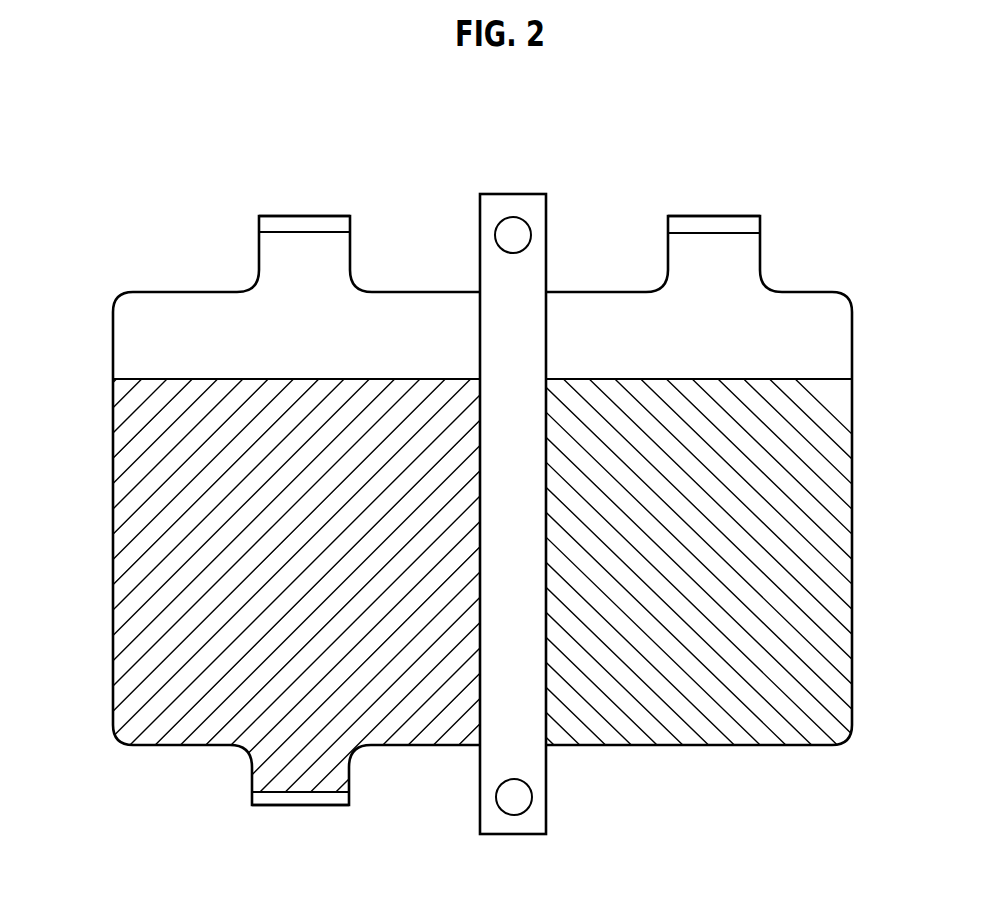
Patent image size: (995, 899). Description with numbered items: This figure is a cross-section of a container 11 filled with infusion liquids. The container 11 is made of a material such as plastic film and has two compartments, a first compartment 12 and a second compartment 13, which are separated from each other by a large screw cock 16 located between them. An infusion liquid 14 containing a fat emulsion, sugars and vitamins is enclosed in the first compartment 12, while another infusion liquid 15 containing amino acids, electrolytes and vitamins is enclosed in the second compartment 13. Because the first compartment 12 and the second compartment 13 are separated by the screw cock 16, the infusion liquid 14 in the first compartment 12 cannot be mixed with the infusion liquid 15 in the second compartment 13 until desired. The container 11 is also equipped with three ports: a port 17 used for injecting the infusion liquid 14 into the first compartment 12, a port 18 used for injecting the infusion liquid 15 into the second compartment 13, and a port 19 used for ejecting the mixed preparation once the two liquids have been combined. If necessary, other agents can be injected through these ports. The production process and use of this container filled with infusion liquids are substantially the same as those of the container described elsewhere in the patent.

The container 11 is at (837, 216).
The first compartment 12 is at (128, 347).
The second compartment 13 is at (836, 357).
The infusion liquid 14 is at (128, 472).
The infusion liquid 15 is at (826, 470).
The screw cock 16 is at (538, 768).
The port 17 is at (313, 218).
The port 18 is at (716, 220).
The port 19 is at (250, 798).